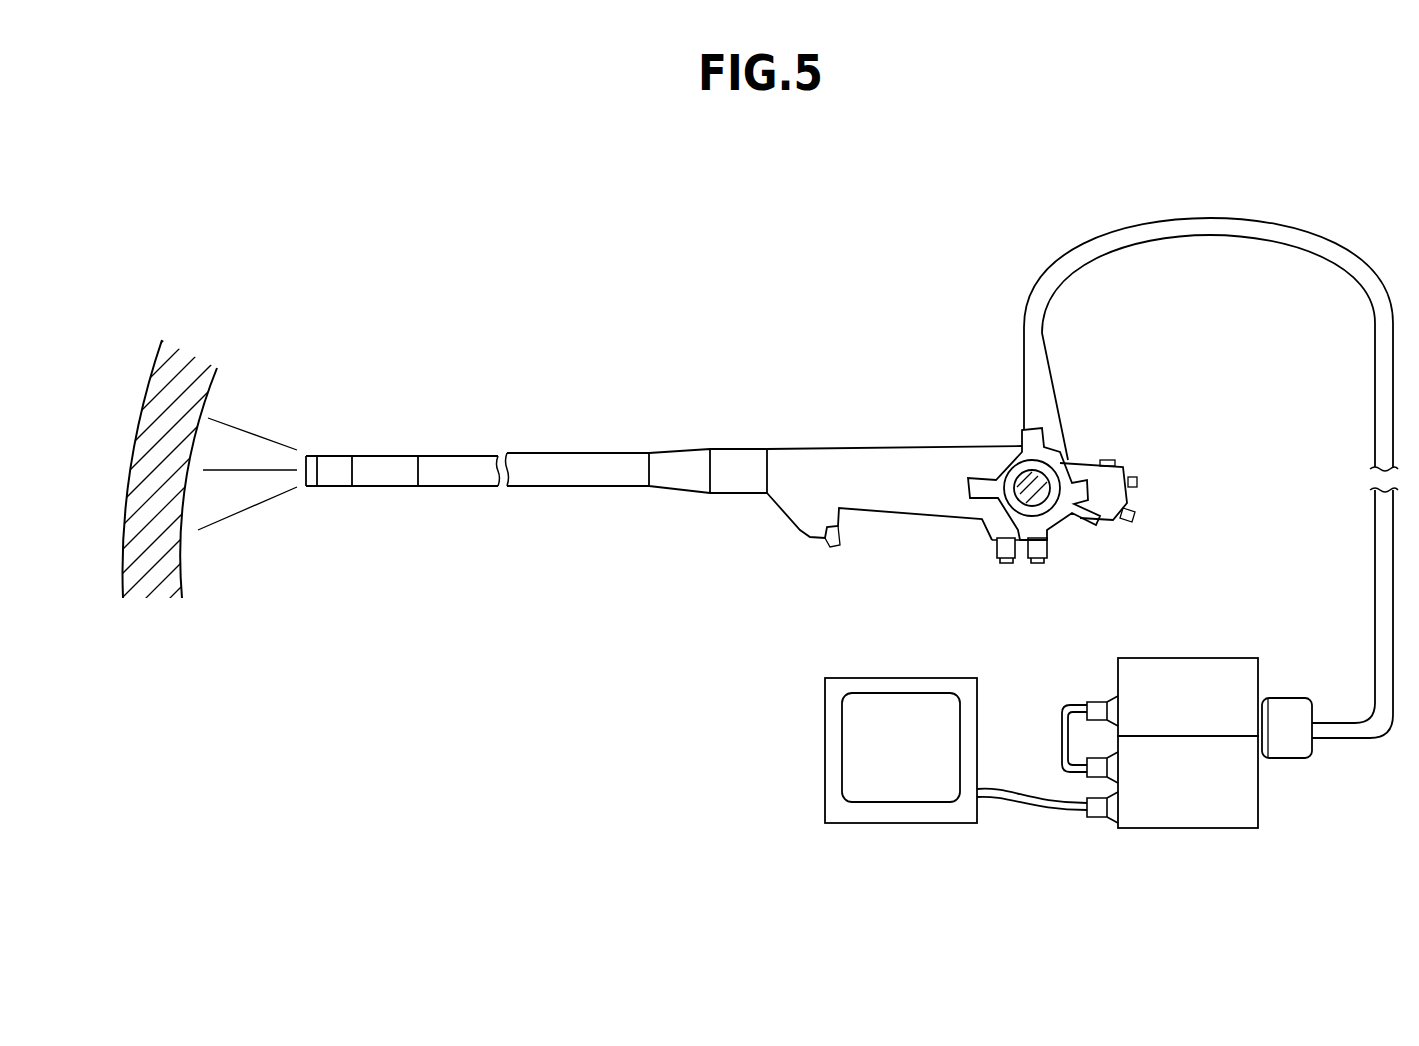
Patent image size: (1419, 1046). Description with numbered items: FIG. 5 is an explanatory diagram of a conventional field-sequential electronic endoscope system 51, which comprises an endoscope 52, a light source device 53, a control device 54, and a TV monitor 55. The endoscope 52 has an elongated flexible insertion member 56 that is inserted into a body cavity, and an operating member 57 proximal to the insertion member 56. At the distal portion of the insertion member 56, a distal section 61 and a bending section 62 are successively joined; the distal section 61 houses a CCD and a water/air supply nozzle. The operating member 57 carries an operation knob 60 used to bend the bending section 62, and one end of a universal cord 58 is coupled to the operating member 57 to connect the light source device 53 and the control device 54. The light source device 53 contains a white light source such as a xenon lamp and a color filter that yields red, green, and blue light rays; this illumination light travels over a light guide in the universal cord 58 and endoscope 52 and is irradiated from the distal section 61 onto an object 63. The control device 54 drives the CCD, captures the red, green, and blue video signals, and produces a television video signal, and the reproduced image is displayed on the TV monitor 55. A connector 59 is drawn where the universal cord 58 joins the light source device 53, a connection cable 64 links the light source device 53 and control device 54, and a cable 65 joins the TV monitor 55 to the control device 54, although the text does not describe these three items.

The electronic endoscope system 51 is at (858, 303).
The endoscope 52 is at (539, 408).
The light source device 53 is at (1190, 657).
The control device 54 is at (1262, 808).
The TV monitor 55 is at (897, 678).
The insertion member 56 is at (460, 455).
The operating member 57 is at (855, 447).
The universal cord 58 is at (1372, 568).
The connector 59 is at (1283, 698).
The operation knob 60 is at (1002, 468).
The distal section 61 is at (333, 455).
The bending section 62 is at (388, 455).
The object 63 is at (183, 557).
The connection cable 64 is at (1062, 733).
The monitor cable 65 is at (1035, 812).